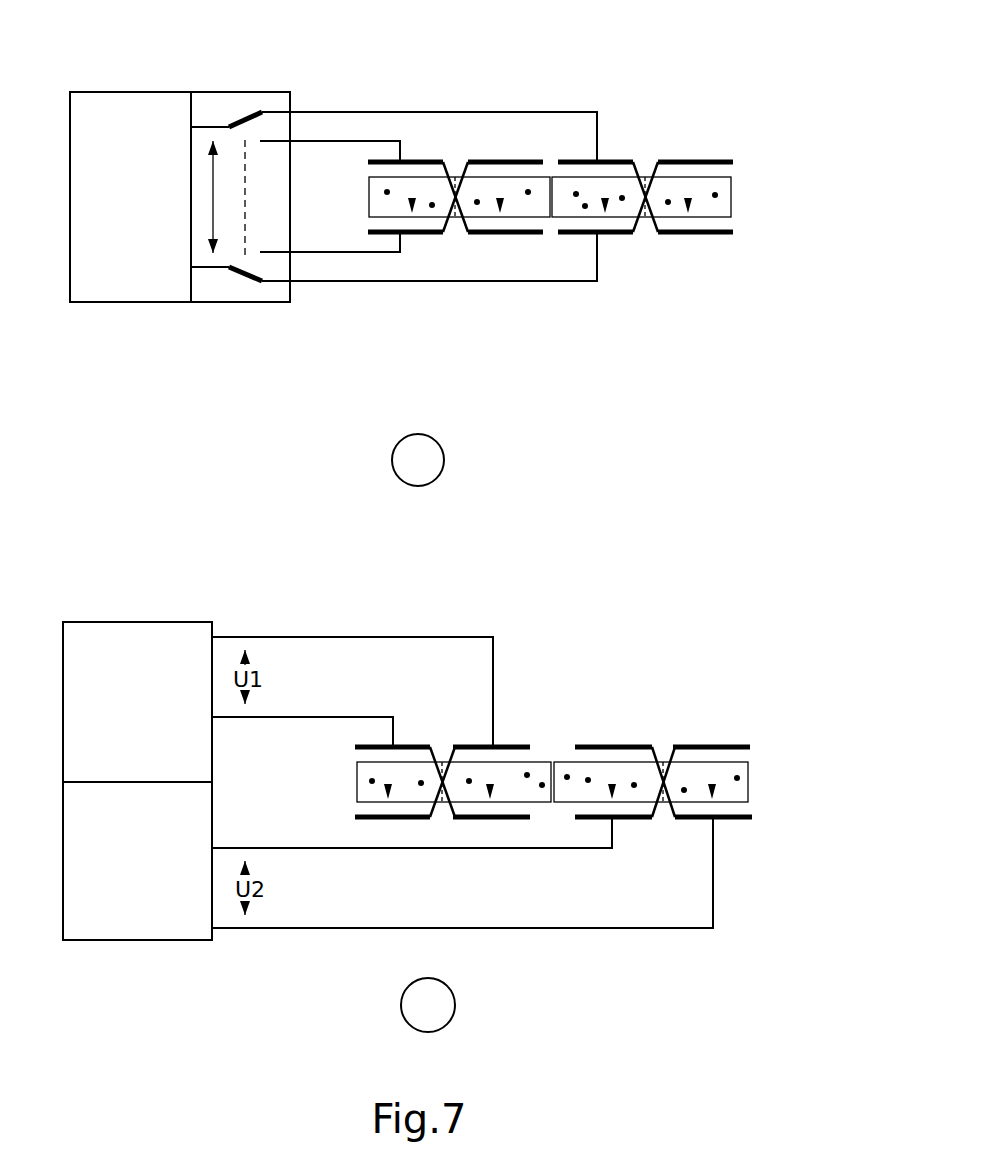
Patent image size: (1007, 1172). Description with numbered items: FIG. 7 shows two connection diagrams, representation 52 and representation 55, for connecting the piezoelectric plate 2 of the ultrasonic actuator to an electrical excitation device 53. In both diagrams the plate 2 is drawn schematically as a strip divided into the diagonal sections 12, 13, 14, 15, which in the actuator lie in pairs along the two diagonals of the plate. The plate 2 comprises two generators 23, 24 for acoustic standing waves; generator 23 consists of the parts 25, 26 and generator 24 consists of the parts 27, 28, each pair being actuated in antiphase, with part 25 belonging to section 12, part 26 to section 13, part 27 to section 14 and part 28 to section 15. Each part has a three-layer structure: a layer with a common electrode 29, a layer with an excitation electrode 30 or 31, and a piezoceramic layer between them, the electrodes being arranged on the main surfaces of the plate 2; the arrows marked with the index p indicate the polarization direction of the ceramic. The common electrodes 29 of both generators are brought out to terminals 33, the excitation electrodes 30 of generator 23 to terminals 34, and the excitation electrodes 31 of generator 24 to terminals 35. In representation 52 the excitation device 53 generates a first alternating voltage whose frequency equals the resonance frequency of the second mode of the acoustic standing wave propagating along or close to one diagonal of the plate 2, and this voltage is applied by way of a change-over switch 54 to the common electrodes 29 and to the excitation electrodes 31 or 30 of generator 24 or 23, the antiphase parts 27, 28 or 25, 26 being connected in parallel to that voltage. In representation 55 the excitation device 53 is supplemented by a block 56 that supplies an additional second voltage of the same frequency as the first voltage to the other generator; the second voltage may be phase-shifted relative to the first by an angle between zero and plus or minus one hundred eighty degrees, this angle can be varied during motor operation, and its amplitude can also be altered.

The piezoelectric plate 2 is at (752, 201).
The diagonal section 12 is at (528, 189).
The diagonal section 13 is at (387, 189).
The diagonal section 14 is at (576, 191).
The diagonal section 15 is at (716, 192).
The generator 23 is at (477, 205).
The generator 24 is at (623, 201).
The part of generator 25 is at (521, 235).
The part of generator 26 is at (432, 208).
The part of generator 27 is at (585, 209).
The part of generator 28 is at (669, 205).
The common electrode 29 is at (492, 160).
The excitation electrode 30 is at (428, 160).
The excitation electrode 31 is at (621, 160).
The terminal 33 is at (412, 538).
The terminal 34 is at (306, 444).
The terminal 35 is at (462, 505).
The representation 52 is at (418, 460).
The electrical excitation device 53 is at (137, 437).
The change-over switch 54 is at (240, 197).
The representation 55 is at (428, 1005).
The block 56 is at (137, 861).